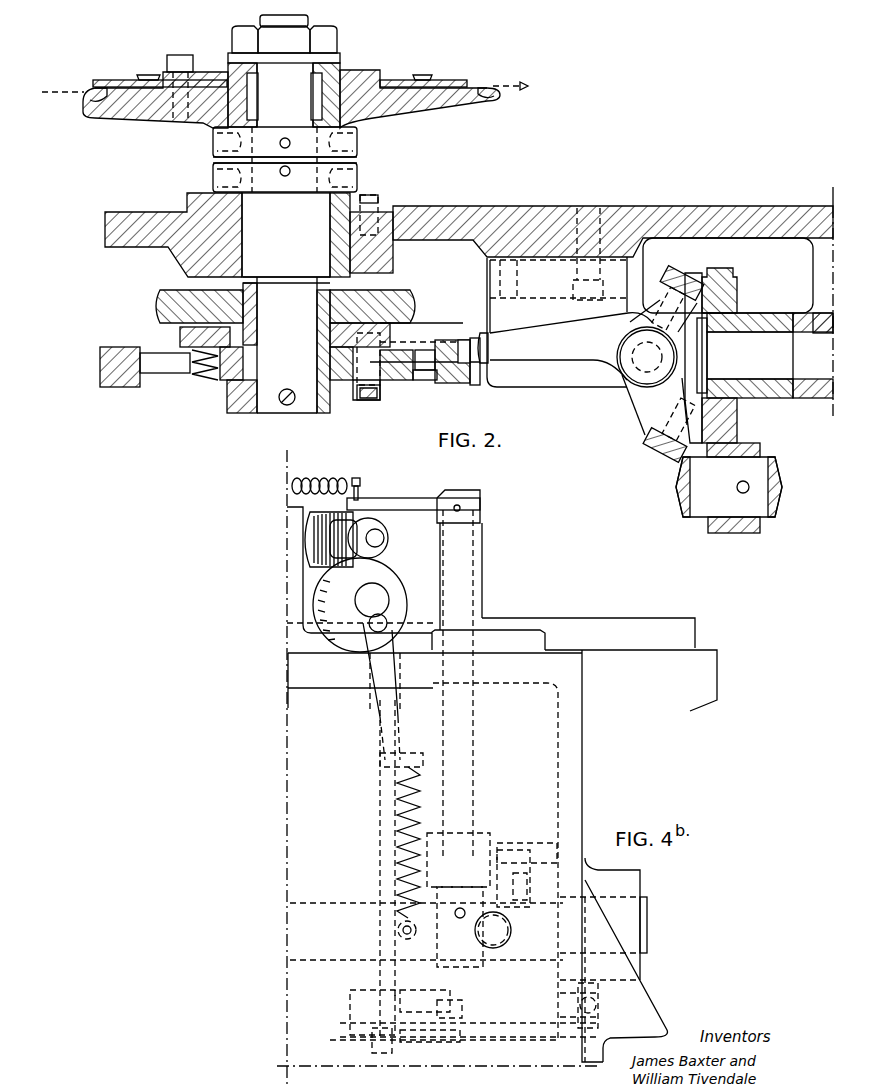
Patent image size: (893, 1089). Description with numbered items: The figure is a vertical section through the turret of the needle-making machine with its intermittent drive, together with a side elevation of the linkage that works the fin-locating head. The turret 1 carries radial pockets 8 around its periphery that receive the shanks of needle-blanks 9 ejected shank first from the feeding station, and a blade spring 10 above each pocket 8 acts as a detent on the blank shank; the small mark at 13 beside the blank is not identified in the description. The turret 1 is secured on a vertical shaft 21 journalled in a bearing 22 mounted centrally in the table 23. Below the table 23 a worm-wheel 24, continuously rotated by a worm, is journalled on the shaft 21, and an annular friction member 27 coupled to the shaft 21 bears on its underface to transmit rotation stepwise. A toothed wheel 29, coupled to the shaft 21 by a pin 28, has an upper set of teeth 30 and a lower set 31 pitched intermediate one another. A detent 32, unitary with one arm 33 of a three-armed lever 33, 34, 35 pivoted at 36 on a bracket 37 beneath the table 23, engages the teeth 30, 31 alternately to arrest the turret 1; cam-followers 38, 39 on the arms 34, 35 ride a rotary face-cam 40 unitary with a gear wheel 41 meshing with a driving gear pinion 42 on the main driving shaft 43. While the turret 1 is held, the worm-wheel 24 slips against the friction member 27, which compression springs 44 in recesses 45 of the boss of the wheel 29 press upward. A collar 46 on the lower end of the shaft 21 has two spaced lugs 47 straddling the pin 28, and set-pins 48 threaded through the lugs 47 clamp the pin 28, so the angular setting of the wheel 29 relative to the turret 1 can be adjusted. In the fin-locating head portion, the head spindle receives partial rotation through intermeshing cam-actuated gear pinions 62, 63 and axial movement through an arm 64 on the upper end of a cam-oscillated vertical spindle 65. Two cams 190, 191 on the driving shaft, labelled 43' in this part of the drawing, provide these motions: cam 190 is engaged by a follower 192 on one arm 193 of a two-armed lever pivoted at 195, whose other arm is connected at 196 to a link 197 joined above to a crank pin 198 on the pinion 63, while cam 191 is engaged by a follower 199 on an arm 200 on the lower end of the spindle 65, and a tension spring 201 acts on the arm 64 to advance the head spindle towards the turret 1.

In FIG. 2, the turret 1 is at (431, 111).
In FIG. 2, the radial pockets 8 is at (88, 104).
In FIG. 2, the needle-blanks 9 is at (80, 90).
In FIG. 2, the blade spring 10 is at (120, 79).
In FIG. 2, the arrow / direction 13 is at (530, 82).
In FIG. 2, the vertical shaft 21 is at (284, 214).
In FIG. 2, the bearing 22 is at (337, 240).
In FIG. 2, the table 23 is at (125, 214).
In FIG. 2, the worm-wheel 24 is at (418, 300).
In FIG. 2, the annular friction member 27 is at (453, 312).
In FIG. 2, the pin 28 is at (371, 404).
In FIG. 2, the toothed wheel 29 is at (405, 378).
In FIG. 2, the upper set of teeth 30 is at (457, 340).
In FIG. 2, the lower set of teeth 31 is at (476, 386).
In FIG. 2, the detent 32 is at (482, 331).
In FIG. 2, the arm of three-armed lever 33 is at (540, 336).
In FIG. 2, the arm of three-armed lever 34 is at (654, 313).
In FIG. 2, the arm of three-armed lever 35 is at (640, 400).
In FIG. 2, the pivot 36 is at (622, 357).
In FIG. 2, the bracket 37 is at (560, 389).
In FIG. 2, the cam-follower 38 is at (667, 280).
In FIG. 2, the cam-follower 39 is at (648, 446).
In FIG. 2, the rotary face-cam 40 is at (668, 405).
In FIG. 2, the gear wheel 41 is at (725, 272).
In FIG. 2, the driving gear pinion 42 is at (745, 446).
In FIG. 2, the main driving shaft 43 is at (729, 495).
In FIG. 2, the compression springs 44 is at (219, 378).
In FIG. 2, the recesses 45 is at (193, 378).
In FIG. 2, the collar 46 is at (327, 413).
In FIG. 2, the lugs 47 is at (384, 398).
In FIG. 2, the set-pins 48 is at (364, 401).
In FIG. 4B, the gear pinion 62 is at (312, 522).
In FIG. 4B, the gear pinion 63 is at (381, 576).
In FIG. 4B, the arm 64 is at (397, 505).
In FIG. 4B, the cam-oscillated vertical spindle 65 is at (464, 717).
In FIG. 4B, the cam 190 is at (440, 946).
In FIG. 4B, the cam 191 is at (530, 860).
In FIG. 4B, the follower 192 is at (443, 1000).
In FIG. 4B, the arm of two-armed lever 193 is at (440, 1040).
In FIG. 4B, the pivot 195 is at (447, 1005).
In FIG. 4B, the pivotal connection 196 is at (372, 1052).
In FIG. 4B, the link 197 is at (385, 886).
In FIG. 4B, the crank pin 198 is at (388, 616).
In FIG. 4B, the follower 199 is at (518, 937).
In FIG. 4B, the arm 200 is at (458, 936).
In FIG. 4B, the tension spring 201 is at (318, 480).
In FIG. 4B, the block 43' is at (365, 995).